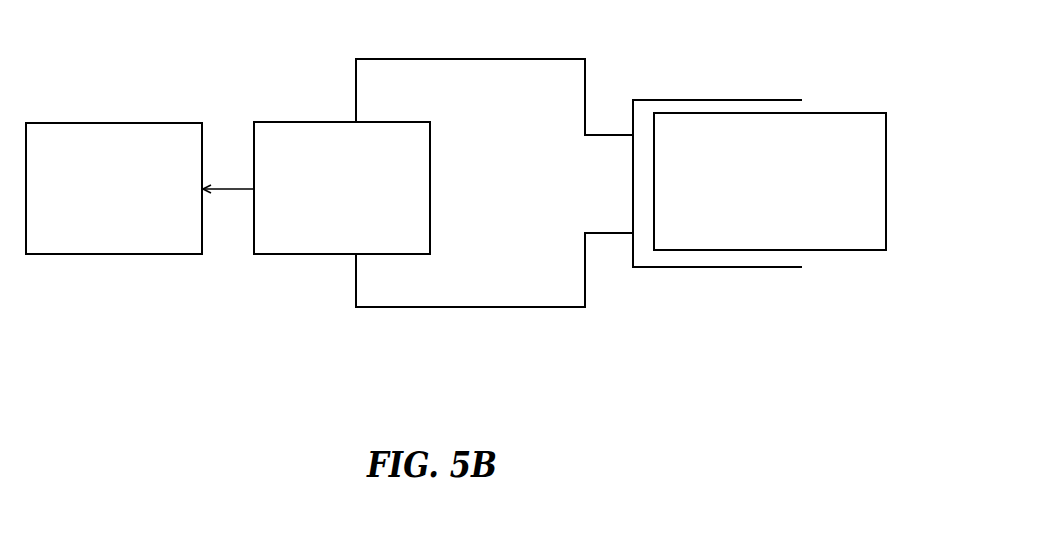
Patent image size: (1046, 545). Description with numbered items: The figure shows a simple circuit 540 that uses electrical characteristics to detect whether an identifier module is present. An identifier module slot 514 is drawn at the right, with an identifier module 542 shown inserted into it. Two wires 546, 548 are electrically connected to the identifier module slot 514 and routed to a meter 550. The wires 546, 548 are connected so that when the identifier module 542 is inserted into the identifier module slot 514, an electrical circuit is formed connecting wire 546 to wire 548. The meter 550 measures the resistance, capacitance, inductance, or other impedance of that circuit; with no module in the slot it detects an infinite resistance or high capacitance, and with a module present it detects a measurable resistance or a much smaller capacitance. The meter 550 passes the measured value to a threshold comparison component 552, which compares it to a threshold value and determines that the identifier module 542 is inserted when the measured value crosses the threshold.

The identifier module slot 514 is at (707, 98).
The circuit 540 is at (764, 390).
The identifier module 542 is at (855, 112).
The wire 546 is at (600, 133).
The wire 548 is at (600, 233).
The meter 550 is at (342, 188).
The threshold comparison component 552 is at (114, 188).